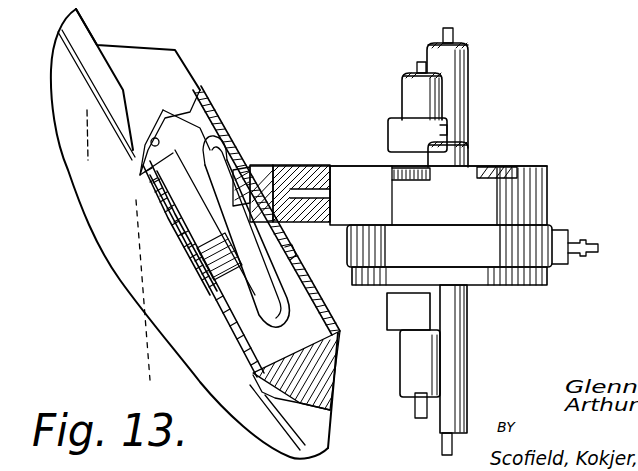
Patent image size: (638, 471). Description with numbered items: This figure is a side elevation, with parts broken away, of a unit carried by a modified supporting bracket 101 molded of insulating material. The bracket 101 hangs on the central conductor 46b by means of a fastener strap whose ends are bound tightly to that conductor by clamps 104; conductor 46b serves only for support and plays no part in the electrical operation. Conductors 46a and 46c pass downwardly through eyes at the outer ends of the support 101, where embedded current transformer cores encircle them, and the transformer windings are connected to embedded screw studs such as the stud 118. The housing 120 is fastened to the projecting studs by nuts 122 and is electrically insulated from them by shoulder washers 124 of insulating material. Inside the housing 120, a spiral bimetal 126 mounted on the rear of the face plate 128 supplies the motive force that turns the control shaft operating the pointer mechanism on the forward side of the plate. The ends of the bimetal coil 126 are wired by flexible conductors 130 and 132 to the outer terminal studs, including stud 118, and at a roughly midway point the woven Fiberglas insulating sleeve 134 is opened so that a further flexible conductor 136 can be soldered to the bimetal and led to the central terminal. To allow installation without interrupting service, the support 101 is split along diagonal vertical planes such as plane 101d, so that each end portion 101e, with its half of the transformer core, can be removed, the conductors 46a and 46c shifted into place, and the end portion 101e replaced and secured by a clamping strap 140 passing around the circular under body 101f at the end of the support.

The housing 120 is at (152, 42).
The flexible conductor 130 is at (212, 113).
The flexible conductor 136 is at (302, 371).
The spiral bimetal 126 is at (170, 168).
The face plate 128 is at (204, 284).
The flexible conductor 132 is at (288, 283).
The woven Fiberglas insulating sleeve 134 is at (228, 272).
The nut 122 is at (257, 169).
The shoulder washer 124 is at (280, 235).
The screw stud 118 is at (277, 166).
The supporting bracket 101 is at (355, 177).
The diagonally disposed vertical plane 101d is at (395, 208).
The end portion 101e is at (547, 194).
The circular under body 101f is at (385, 287).
The clamping strap 140 is at (449, 246).
The conductor 46a is at (460, 69).
The central conductor 46b is at (408, 95).
The conductor 46c is at (462, 158).
The clamp 104 is at (398, 138).